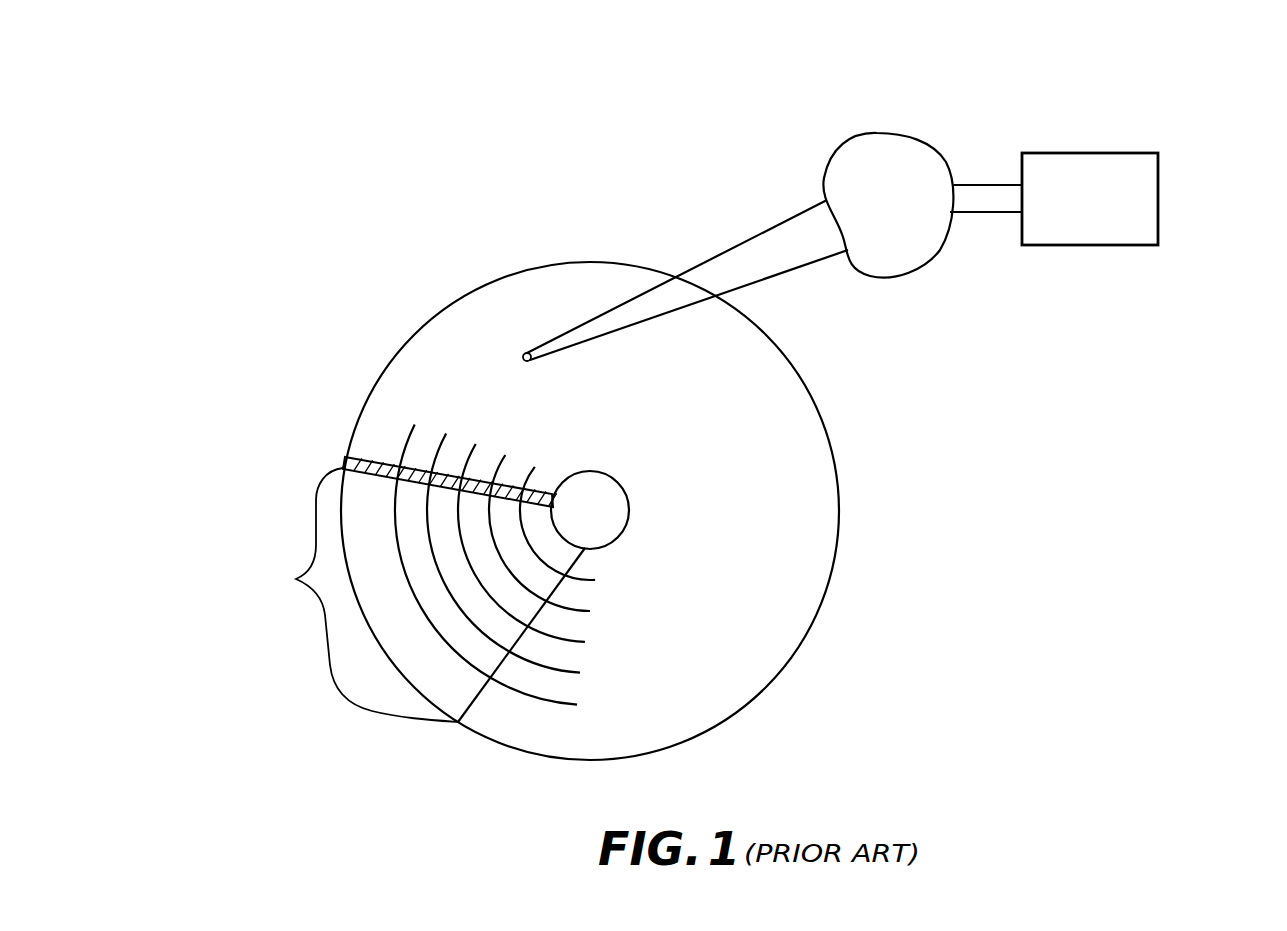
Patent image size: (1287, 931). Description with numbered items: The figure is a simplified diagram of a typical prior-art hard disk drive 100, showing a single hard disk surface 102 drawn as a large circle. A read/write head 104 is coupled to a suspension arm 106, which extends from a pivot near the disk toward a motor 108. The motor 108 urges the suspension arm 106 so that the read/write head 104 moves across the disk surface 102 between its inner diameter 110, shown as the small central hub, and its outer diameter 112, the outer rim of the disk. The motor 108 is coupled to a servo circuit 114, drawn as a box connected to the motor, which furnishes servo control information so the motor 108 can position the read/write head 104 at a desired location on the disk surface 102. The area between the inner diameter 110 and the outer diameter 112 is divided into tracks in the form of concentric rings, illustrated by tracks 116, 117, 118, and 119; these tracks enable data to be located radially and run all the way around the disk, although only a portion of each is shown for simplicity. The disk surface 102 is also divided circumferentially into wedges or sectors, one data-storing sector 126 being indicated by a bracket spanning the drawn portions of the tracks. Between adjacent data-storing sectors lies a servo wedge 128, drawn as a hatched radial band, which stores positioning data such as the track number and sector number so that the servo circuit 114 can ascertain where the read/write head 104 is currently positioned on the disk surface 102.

The hard disk drive 100 is at (478, 141).
The hard disk surface 102 is at (778, 535).
The read/write head 104 is at (525, 352).
The suspension arm 106 is at (737, 252).
The motor 108 is at (924, 141).
The inner diameter 110 is at (619, 468).
The outer diameter 112 is at (846, 430).
The servo circuit 114 is at (1158, 178).
The track 116 is at (541, 588).
The track 117 is at (523, 613).
The track 118 is at (503, 640).
The track 119 is at (485, 669).
The sector 126 is at (296, 579).
The servo wedge 128 is at (360, 457).